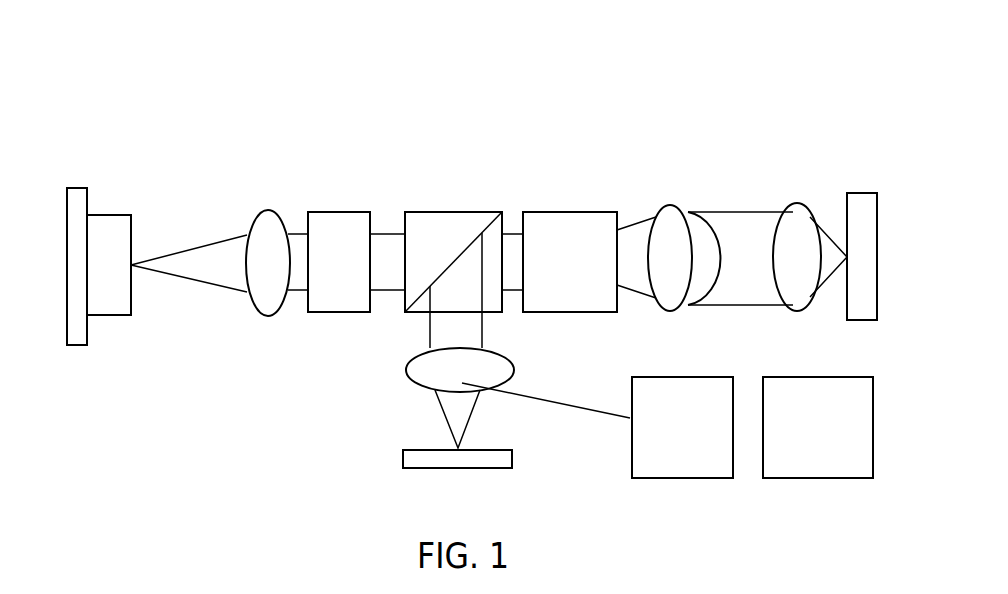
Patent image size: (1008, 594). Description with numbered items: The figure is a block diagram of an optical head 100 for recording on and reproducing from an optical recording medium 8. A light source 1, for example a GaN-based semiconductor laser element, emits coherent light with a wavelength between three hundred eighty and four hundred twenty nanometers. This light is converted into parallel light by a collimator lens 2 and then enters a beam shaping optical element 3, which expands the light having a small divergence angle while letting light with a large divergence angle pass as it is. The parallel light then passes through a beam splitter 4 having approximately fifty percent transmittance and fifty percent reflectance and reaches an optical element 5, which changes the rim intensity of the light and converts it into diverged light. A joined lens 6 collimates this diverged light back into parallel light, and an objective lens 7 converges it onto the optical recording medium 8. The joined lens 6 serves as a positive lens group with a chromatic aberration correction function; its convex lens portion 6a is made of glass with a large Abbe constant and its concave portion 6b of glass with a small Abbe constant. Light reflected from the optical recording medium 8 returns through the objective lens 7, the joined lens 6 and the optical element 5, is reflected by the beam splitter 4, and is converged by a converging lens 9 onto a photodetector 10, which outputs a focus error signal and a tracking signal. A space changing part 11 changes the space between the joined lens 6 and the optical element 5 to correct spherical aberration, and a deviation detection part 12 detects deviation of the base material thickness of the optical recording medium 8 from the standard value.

The optical head 100 is at (692, 90).
The light source 1 is at (78, 188).
The collimator lens 2 is at (268, 210).
The beam shaping optical element 3 is at (340, 212).
The beam splitter 4 is at (455, 212).
The optical element 5 is at (583, 312).
The joined lens 6 is at (679, 258).
The convex lens portion 6a is at (668, 215).
The concave portion 6b is at (697, 217).
The objective lens 7 is at (797, 203).
The optical recording medium 8 is at (862, 193).
The converging lens 9 is at (507, 370).
The photodetector 10 is at (512, 458).
The space changing part 11 is at (700, 478).
The deviation detection part 12 is at (825, 478).